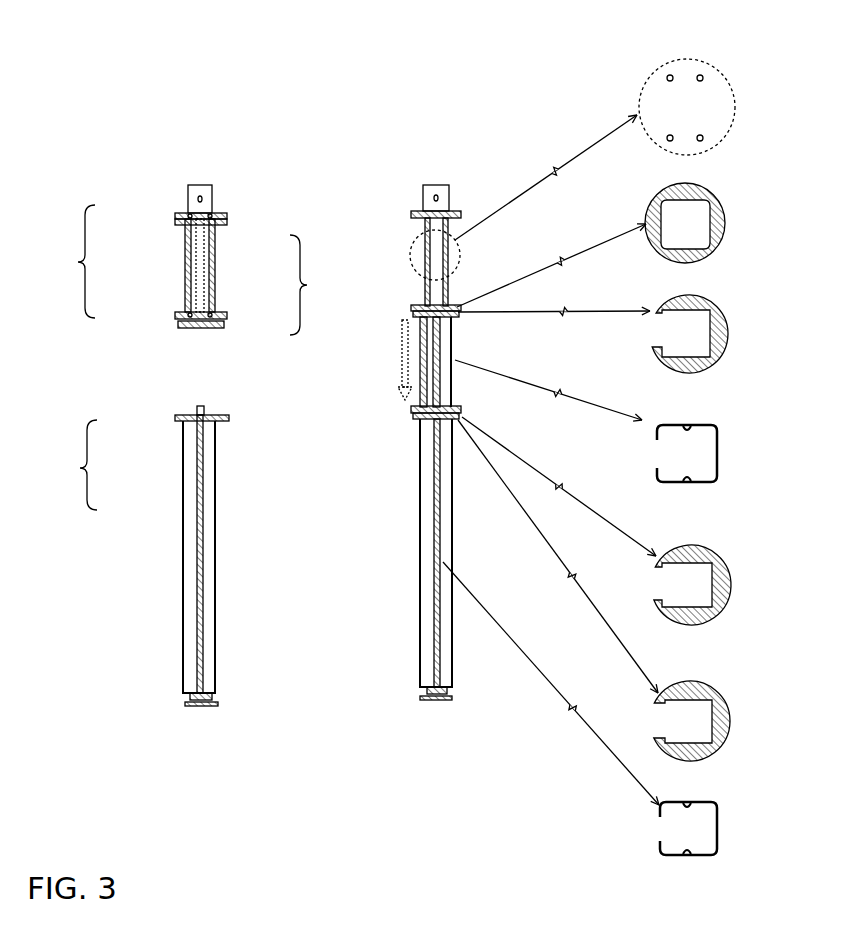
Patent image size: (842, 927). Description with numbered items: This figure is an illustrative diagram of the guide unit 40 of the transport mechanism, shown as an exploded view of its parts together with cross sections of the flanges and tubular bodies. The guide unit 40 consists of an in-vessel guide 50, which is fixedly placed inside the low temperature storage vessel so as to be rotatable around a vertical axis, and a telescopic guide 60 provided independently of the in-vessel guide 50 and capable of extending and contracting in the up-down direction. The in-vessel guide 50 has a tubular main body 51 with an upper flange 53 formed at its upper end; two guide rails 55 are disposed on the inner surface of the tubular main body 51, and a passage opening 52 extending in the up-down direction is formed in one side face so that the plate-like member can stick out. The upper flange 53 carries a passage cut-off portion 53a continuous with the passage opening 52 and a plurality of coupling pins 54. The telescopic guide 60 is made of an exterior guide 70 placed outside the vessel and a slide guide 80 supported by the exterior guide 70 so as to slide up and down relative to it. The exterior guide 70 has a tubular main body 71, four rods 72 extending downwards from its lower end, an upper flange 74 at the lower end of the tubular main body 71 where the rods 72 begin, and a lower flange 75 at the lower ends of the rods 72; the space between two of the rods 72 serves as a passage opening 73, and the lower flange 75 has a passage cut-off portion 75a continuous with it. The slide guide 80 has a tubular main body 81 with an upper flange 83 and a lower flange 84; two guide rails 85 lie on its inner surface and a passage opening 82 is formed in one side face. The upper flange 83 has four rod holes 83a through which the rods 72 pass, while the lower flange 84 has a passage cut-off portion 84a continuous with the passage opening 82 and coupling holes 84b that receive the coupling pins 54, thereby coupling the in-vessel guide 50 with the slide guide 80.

The guide unit 40 is at (160, 122).
The in-vessel guide 50 is at (75, 465).
The tubular main body 51 is at (191, 508).
The passage opening 52 is at (662, 828).
The upper flange 53 is at (178, 419).
The passage cut-off portion 53a is at (666, 715).
The coupling pins 54 is at (204, 409).
The guide rails 55 is at (205, 492).
The telescopic guide 60 is at (256, 168).
The exterior guide 70 is at (70, 261).
The tubular main body 71 is at (186, 196).
The rods 72 is at (185, 262).
The passage opening 73 is at (668, 105).
The upper flange 74 is at (178, 217).
The lower flange 75 is at (176, 314).
The passage cut-off portion 75a is at (650, 330).
The slide guide 80 is at (315, 285).
The tubular main body 81 is at (210, 290).
The passage opening 82 is at (660, 455).
The upper flange 83 is at (218, 224).
The rod holes 83a is at (688, 188).
The lower flange 84 is at (226, 325).
The passage cut-off portion 84a is at (662, 583).
The coupling holes 84b is at (692, 553).
The guide rails 85 is at (212, 262).